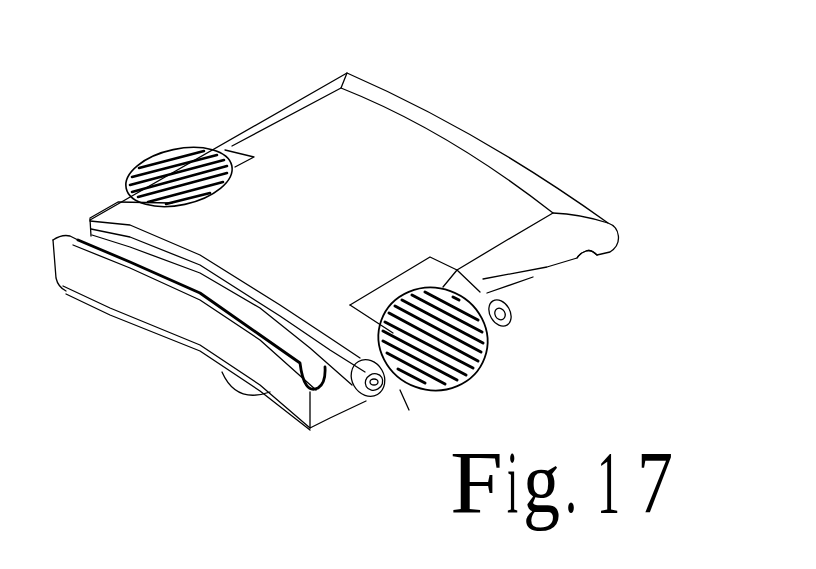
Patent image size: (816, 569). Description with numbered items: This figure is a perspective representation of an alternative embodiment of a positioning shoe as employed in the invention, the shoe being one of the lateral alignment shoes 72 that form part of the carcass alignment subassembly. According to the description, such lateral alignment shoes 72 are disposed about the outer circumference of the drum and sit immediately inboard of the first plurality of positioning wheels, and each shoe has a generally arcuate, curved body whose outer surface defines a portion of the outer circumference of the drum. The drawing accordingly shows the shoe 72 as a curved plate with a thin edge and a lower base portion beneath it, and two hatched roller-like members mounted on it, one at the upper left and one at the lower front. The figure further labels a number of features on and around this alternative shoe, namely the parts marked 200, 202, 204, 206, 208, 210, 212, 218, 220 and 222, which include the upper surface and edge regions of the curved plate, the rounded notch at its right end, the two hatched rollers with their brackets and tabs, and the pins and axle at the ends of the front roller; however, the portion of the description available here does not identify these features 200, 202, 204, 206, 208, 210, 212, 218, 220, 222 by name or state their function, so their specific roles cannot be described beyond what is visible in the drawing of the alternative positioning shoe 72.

The lateral alignment shoe 72 is at (478, 89).
The first cam 200 is at (157, 157).
The second roller 202 is at (485, 372).
The plate top surface 204 is at (313, 125).
The plate top edge 206 is at (332, 80).
The axle bar 208 is at (537, 279).
The notch 210 is at (578, 258).
The pin 212 is at (398, 388).
The second cam 218 is at (400, 297).
The plate right portion 220 is at (480, 187).
The bracket tab 222 is at (433, 287).